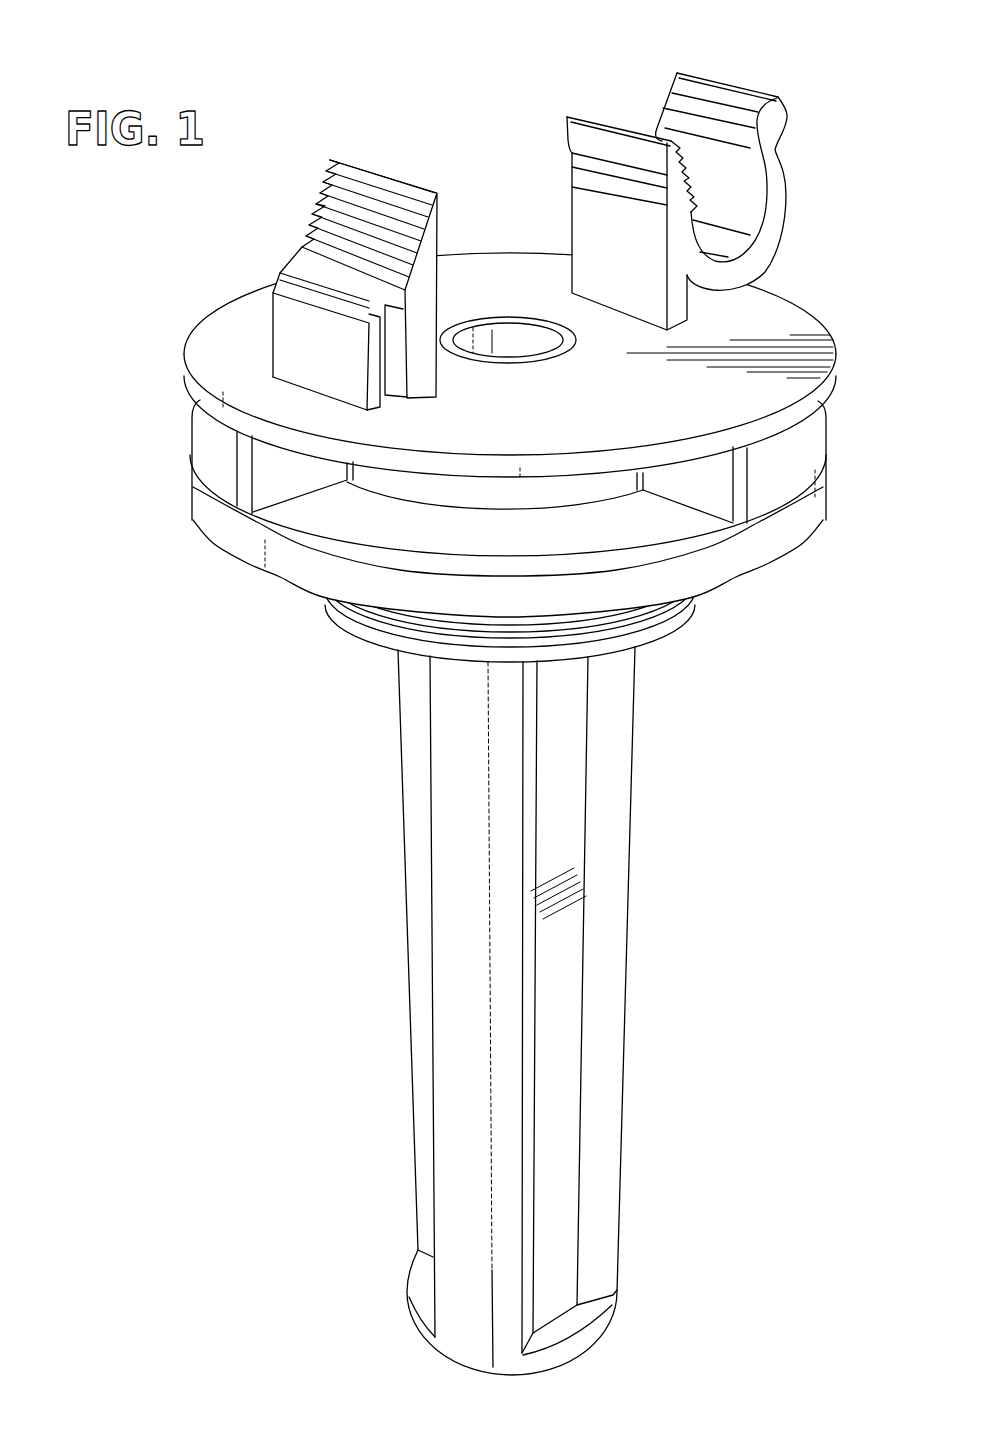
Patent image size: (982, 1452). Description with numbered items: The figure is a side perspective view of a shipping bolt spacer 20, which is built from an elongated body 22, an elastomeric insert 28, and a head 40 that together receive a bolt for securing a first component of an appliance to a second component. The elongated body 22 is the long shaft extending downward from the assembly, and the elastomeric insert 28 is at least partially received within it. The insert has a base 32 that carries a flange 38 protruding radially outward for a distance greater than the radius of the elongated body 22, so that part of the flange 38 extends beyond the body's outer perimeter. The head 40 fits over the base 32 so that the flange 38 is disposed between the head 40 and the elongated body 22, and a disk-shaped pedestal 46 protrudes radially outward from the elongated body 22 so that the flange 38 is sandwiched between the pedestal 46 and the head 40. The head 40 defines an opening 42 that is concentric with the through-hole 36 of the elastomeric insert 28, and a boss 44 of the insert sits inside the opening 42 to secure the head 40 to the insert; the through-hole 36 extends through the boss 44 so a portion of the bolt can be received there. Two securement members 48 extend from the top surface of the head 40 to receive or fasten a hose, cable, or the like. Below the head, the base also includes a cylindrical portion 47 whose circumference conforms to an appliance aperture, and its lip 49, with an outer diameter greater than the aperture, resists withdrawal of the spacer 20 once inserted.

The shipping bolt spacer 20 is at (410, 96).
The elongated body 22 is at (605, 933).
The elastomeric insert 28 is at (207, 527).
The base 32 is at (423, 508).
The through-hole 36 is at (510, 337).
The flange 38 is at (423, 508).
The head 40 is at (800, 357).
The opening 42 is at (485, 318).
The boss 44 is at (463, 337).
The disk-shaped pedestal 46 is at (460, 620).
The cylindrical portion 47 is at (350, 617).
The securement members 48 is at (312, 209).
The lip 49 is at (390, 614).